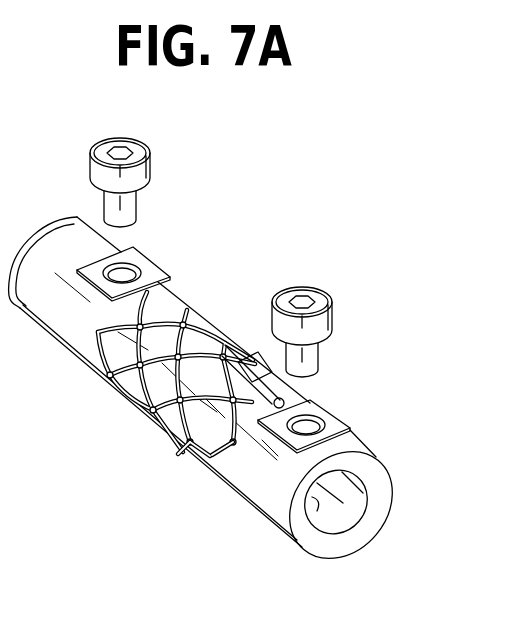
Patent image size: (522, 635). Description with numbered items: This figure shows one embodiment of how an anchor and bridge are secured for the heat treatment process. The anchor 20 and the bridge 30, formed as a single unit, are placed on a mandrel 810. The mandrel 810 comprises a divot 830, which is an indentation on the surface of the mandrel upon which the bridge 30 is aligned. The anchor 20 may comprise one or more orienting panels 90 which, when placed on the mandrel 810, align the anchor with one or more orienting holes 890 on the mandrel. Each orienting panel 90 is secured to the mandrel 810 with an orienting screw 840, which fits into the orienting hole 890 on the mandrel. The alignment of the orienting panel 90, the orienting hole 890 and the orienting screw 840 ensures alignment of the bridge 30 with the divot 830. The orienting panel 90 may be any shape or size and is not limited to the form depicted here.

The anchor 20 is at (128, 398).
The bridge 30 is at (222, 447).
The orienting panel 90 is at (335, 427).
The mandrel 810 is at (383, 490).
The divot 830 is at (252, 363).
The orienting screw 840 is at (317, 330).
The orienting hole 890 is at (306, 426).